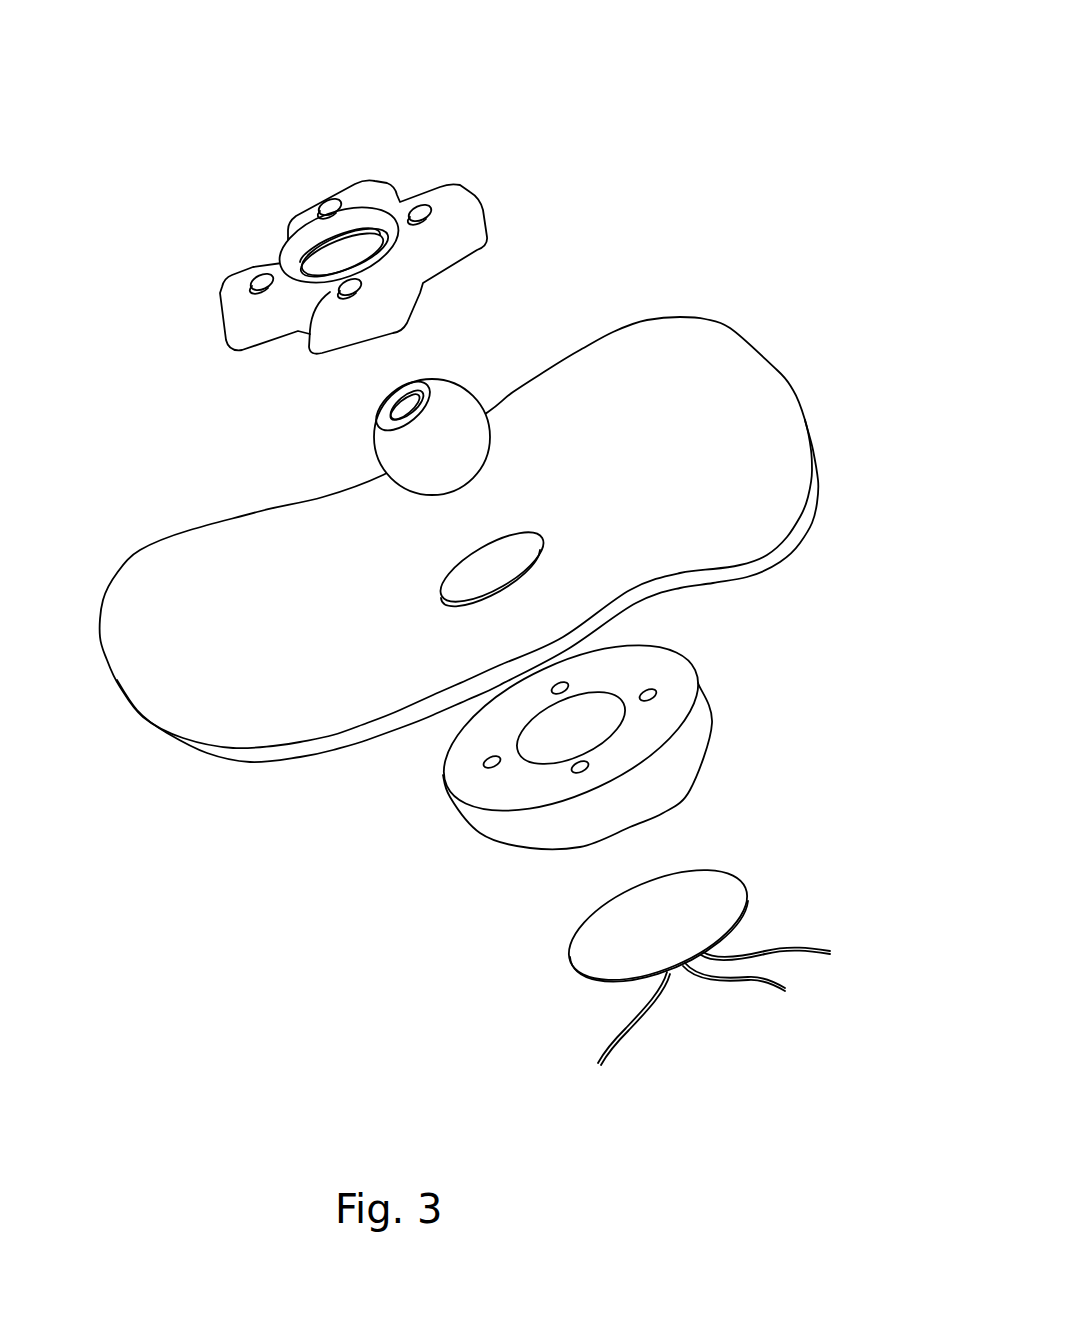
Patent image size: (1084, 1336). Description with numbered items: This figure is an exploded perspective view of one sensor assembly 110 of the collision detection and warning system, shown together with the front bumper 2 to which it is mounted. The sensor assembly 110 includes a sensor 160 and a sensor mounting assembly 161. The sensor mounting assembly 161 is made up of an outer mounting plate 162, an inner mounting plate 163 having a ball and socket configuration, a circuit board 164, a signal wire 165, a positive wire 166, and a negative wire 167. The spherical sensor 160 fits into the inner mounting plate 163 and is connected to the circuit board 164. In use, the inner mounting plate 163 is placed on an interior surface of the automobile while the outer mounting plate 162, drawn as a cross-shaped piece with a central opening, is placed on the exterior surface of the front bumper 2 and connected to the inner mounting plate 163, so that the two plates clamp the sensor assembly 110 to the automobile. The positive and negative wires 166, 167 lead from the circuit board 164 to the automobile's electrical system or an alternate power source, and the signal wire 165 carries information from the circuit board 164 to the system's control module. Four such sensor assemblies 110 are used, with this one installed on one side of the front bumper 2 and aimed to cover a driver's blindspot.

The front bumper 2 is at (687, 318).
The sensor assembly 110 is at (648, 128).
The sensor 160 is at (463, 390).
The sensor mounting assembly 161 is at (297, 241).
The outer mounting plate 162 is at (223, 325).
The inner mounting plate 163 is at (707, 687).
The circuit board 164 is at (687, 936).
The signal wire 165 is at (620, 1024).
The positive wire 166 is at (759, 983).
The negative wire 167 is at (810, 945).